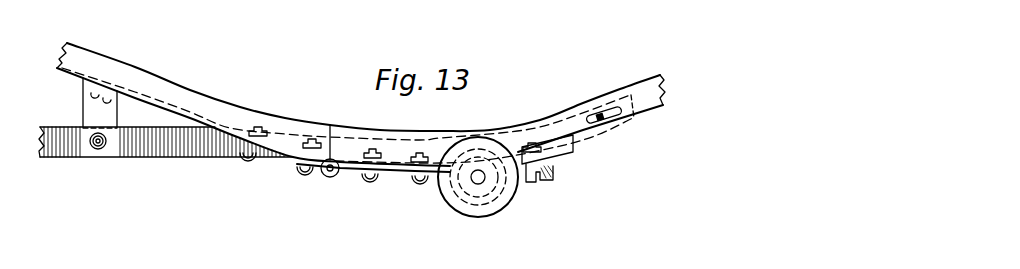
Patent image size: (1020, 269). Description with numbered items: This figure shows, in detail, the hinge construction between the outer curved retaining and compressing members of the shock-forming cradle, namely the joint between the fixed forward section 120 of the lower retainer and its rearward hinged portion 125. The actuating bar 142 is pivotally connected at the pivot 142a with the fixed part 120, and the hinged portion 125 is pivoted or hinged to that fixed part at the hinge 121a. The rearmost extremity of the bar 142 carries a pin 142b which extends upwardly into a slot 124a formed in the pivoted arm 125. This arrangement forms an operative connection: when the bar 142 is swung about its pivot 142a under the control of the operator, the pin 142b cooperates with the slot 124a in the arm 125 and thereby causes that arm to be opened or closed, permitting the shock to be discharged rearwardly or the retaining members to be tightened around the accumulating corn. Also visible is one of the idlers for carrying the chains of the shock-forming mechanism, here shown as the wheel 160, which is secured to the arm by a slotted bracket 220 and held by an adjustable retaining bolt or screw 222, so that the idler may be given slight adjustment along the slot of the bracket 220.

The forward section of the lower retainer 120 is at (220, 110).
The hinge pivot 121a is at (332, 177).
The slot 124a is at (620, 115).
The curved hinged member 125 is at (583, 110).
The actuating bar 142 is at (150, 147).
The pivot 142a is at (98, 150).
The pin 142b is at (603, 118).
The wheel 160 is at (492, 210).
The slotted bracket 220 is at (573, 160).
The adjustable retaining bolt 222 is at (557, 180).